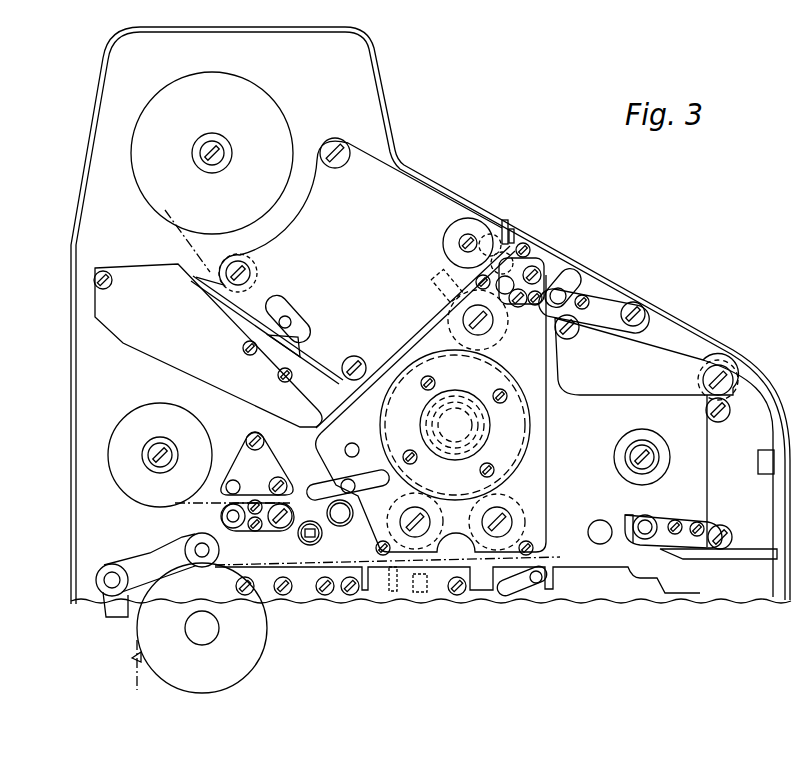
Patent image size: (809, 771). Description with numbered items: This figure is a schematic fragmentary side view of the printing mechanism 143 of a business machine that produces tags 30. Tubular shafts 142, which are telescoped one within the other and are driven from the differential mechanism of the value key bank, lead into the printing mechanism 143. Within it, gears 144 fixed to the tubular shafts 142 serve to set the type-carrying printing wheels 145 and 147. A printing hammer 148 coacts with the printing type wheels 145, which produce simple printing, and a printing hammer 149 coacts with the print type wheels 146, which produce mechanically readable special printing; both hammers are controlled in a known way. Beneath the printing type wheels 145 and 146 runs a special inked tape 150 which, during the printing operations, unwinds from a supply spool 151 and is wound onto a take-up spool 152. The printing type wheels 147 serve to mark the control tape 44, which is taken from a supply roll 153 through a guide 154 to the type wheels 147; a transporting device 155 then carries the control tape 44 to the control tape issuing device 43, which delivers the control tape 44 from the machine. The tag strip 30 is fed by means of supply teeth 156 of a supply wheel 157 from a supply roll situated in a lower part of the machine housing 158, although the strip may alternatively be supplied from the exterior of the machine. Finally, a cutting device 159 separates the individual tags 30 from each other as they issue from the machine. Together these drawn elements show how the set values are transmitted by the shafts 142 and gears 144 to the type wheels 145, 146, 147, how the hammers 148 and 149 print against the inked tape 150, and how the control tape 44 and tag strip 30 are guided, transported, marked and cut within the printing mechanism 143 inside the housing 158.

The tags 30 is at (340, 565).
The control tape issuing device 43 is at (510, 233).
The control tape 44 is at (530, 223).
The tubular shafts 142 is at (485, 428).
The printing mechanism 143 is at (410, 188).
The gears 144 is at (532, 385).
The printing type wheels 145 is at (393, 560).
The print type wheels 146 is at (618, 447).
The printing type wheels 147 is at (445, 310).
The printing hammer 148 is at (420, 592).
The printing hammer 149 is at (500, 592).
The inked tape 150 is at (200, 505).
The supply spool 151 is at (652, 468).
The take-up spool 152 is at (132, 420).
The supply roll 153 is at (150, 190).
The guide 154 is at (378, 360).
The transporting device 155 is at (498, 223).
The supply teeth 156 is at (137, 657).
The supply wheel 157 is at (262, 640).
The housing 158 is at (76, 520).
The cutting device 159 is at (630, 540).